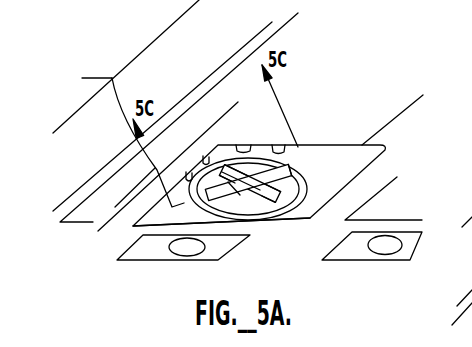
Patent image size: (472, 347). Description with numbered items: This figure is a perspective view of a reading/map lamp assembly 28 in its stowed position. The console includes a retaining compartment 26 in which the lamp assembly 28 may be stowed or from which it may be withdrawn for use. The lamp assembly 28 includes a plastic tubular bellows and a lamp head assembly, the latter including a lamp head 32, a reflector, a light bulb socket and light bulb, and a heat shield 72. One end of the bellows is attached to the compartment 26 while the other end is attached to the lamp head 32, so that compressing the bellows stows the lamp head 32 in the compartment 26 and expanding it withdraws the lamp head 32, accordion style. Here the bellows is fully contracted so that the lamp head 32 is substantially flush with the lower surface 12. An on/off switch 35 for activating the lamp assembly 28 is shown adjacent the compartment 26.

The lower surface 12 is at (313, 124).
The retaining compartment 26 is at (327, 177).
The reading/map lamp assembly 28 is at (291, 252).
The lamp head 32 is at (233, 147).
The switch 35 is at (150, 262).
The heat shield 72 is at (275, 182).